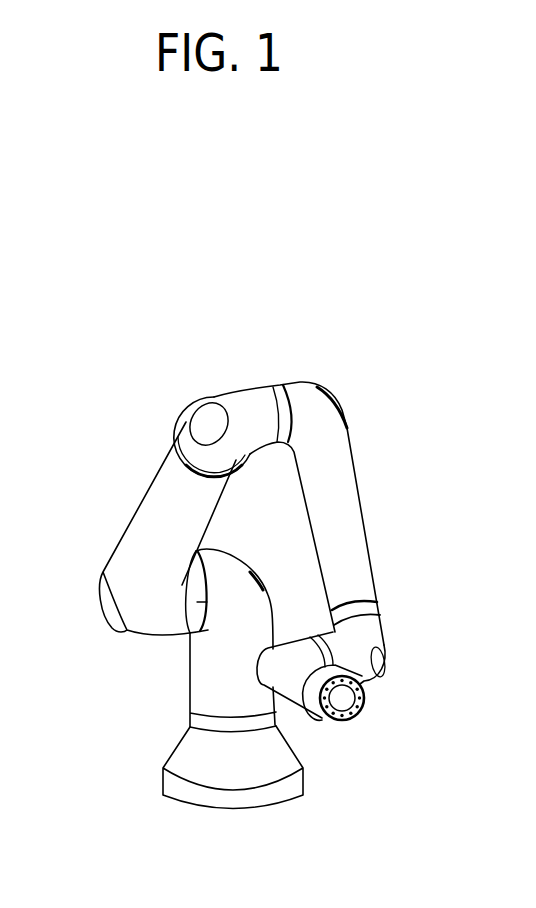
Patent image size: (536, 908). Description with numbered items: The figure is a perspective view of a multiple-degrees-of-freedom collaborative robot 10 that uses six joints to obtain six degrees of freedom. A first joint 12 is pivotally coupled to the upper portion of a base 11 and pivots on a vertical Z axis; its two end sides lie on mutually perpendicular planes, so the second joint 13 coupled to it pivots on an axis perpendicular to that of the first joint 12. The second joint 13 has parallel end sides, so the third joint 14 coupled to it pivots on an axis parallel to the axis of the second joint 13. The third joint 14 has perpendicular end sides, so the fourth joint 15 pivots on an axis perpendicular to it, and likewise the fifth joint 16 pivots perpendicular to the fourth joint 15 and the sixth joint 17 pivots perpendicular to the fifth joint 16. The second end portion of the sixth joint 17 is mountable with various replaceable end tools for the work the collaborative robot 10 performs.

The collaborative robot 10 is at (108, 379).
The base 11 is at (190, 750).
The first joint 12 is at (197, 675).
The second joint 13 is at (132, 517).
The third joint 14 is at (352, 514).
The fourth joint 15 is at (367, 650).
The fifth joint 16 is at (288, 648).
The sixth joint 17 is at (353, 670).